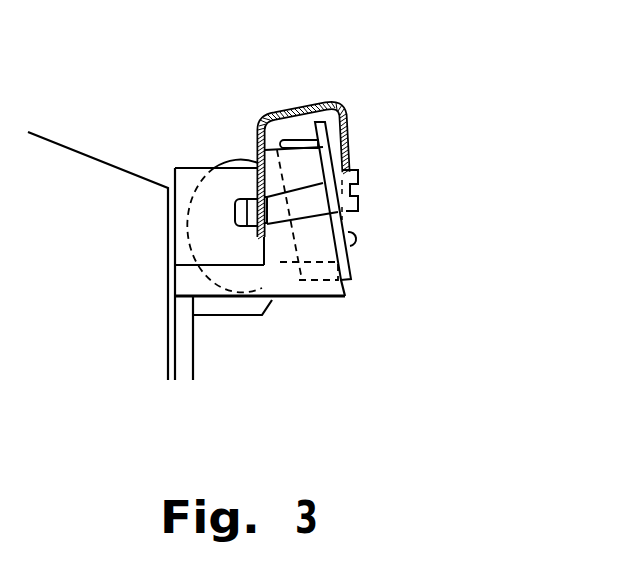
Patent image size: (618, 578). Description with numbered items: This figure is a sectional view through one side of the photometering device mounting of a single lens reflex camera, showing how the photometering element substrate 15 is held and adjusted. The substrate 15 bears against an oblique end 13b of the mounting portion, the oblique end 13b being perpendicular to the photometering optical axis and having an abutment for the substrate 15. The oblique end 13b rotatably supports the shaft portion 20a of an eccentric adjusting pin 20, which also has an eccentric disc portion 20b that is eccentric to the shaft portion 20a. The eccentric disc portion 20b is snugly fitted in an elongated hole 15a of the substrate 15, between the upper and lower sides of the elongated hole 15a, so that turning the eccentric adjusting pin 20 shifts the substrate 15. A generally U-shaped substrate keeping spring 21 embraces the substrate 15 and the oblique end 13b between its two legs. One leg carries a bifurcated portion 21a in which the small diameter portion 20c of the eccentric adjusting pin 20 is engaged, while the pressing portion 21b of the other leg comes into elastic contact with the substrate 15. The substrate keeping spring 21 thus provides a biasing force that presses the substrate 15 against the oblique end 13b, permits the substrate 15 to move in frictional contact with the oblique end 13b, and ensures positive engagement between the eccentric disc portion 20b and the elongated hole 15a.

The oblique end 13b is at (292, 157).
The photometering element substrate 15 is at (352, 265).
The elongated hole 15a is at (355, 228).
The eccentric adjusting pin 20 is at (306, 239).
The shaft portion 20a is at (306, 200).
The eccentric disc portion 20b is at (347, 172).
The small diameter portion 20c is at (257, 197).
The substrate keeping spring 21 is at (329, 100).
The bifurcated portion 21a is at (262, 233).
The pressing portion 21b is at (357, 216).